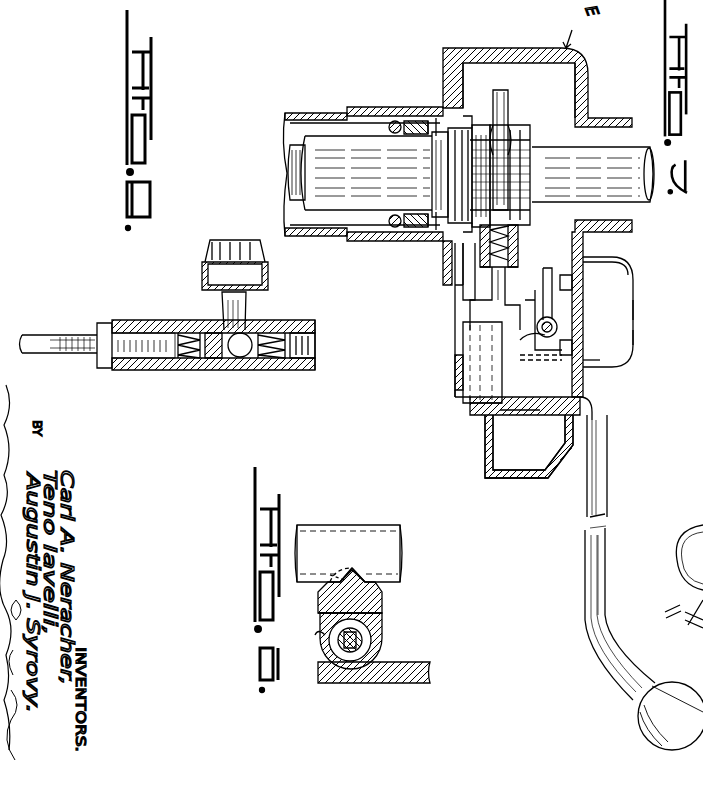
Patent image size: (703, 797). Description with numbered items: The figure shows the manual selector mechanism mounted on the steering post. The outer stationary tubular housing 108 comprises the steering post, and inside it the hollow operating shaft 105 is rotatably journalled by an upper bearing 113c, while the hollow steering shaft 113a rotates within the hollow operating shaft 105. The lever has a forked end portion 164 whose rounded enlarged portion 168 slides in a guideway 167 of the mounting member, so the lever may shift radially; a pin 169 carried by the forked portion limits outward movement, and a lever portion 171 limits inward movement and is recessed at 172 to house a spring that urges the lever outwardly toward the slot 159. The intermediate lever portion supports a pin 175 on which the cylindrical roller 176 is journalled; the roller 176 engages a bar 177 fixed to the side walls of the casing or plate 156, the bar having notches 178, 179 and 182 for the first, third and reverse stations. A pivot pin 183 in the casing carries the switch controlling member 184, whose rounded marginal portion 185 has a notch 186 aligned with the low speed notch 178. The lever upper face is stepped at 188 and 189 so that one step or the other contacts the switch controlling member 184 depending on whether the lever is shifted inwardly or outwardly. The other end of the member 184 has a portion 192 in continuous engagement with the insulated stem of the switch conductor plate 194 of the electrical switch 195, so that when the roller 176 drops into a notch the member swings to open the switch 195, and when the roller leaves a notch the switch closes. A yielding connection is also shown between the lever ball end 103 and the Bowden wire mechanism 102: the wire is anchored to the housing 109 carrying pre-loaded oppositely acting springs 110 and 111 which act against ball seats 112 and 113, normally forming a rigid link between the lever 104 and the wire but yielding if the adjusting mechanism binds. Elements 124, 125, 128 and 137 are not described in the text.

In FIG. 8, the Bowden wire mechanism 102 is at (64, 340).
In FIG. 8, the lever ball end 103 is at (236, 362).
In FIG. 8, the lever 104 is at (262, 272).
In FIG. 7, the hollow operating shaft 105 is at (330, 210).
In FIG. 7, the outer stationary tubular housing 108 is at (317, 120).
In FIG. 8, the housing 109 is at (160, 370).
In FIG. 8, the spring 110 is at (290, 362).
In FIG. 8, the spring 111 is at (195, 370).
In FIG. 8, the ball seat 112 is at (265, 362).
In FIG. 8, the ball seat 113 is at (212, 370).
In FIG. 7, the hollow steering shaft 113a is at (312, 205).
In FIG. 7, the upper bearing 113c is at (400, 240).
In FIG. 7, the block 124 is at (520, 410).
In FIG. 9, the block 124 is at (390, 607).
In FIG. 7, the slide 125 is at (500, 410).
In FIG. 7, the wall 128 is at (592, 378).
In FIG. 7, the handle rod 137 is at (584, 583).
In FIG. 7, the plate (casing/housing) 156 is at (515, 478).
In FIG. 7, the slot 159 is at (555, 470).
In FIG. 7, the forked end portion 164 is at (512, 100).
In FIG. 7, the guideway 167 is at (516, 165).
In FIG. 7, the rounded enlarged portion 168 is at (530, 135).
In FIG. 7, the pin 169 is at (433, 158).
In FIG. 7, the lever portion 171 is at (518, 260).
In FIG. 7, the recess 172 is at (512, 298).
In FIG. 7, the pin 175 is at (464, 305).
In FIG. 7, the cylindrical roller 176 is at (463, 340).
In FIG. 9, the cylindrical roller 176 is at (378, 638).
In FIG. 7, the bar 177 is at (455, 385).
In FIG. 9, the bar 177 is at (405, 683).
In FIG. 9, the notch 178 is at (350, 668).
In FIG. 9, the notch 179 is at (322, 632).
In FIG. 7, the notch 182 is at (606, 430).
In FIG. 7, the pivot pin 183 is at (555, 300).
In FIG. 7, the switch controlling member 184 is at (585, 380).
In FIG. 9, the switch controlling member 184 is at (389, 528).
In FIG. 9, the rounded marginal portion 185 is at (395, 582).
In FIG. 7, the notch 186 is at (540, 358).
In FIG. 9, the notch 186 is at (335, 572).
In FIG. 7, the stepped lever portion 188 is at (590, 283).
In FIG. 9, the stepped lever portion 188 is at (322, 587).
In FIG. 7, the stepped lever portion 189 is at (528, 400).
In FIG. 9, the stepped lever portion 189 is at (350, 565).
In FIG. 7, the portion 192 is at (640, 330).
In FIG. 7, the switch conductor plate 194 is at (633, 320).
In FIG. 7, the electrical switch 195 is at (588, 268).